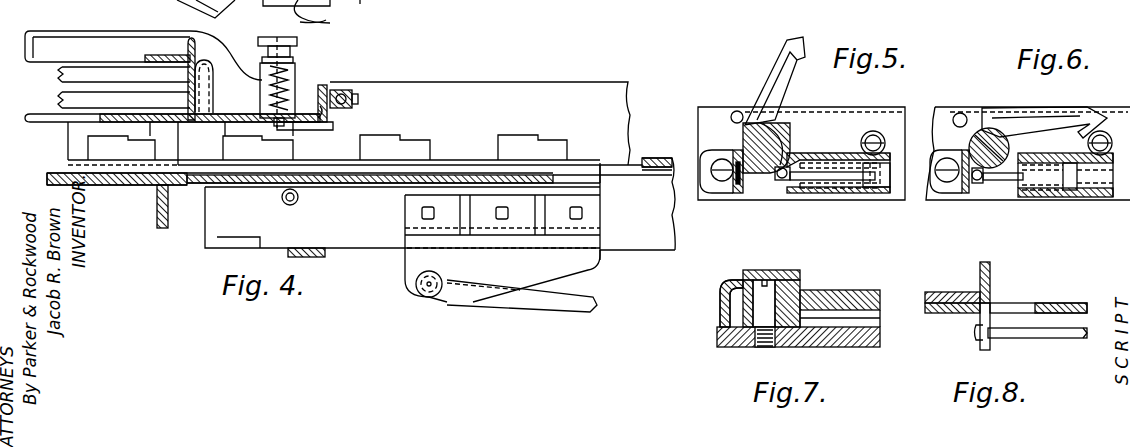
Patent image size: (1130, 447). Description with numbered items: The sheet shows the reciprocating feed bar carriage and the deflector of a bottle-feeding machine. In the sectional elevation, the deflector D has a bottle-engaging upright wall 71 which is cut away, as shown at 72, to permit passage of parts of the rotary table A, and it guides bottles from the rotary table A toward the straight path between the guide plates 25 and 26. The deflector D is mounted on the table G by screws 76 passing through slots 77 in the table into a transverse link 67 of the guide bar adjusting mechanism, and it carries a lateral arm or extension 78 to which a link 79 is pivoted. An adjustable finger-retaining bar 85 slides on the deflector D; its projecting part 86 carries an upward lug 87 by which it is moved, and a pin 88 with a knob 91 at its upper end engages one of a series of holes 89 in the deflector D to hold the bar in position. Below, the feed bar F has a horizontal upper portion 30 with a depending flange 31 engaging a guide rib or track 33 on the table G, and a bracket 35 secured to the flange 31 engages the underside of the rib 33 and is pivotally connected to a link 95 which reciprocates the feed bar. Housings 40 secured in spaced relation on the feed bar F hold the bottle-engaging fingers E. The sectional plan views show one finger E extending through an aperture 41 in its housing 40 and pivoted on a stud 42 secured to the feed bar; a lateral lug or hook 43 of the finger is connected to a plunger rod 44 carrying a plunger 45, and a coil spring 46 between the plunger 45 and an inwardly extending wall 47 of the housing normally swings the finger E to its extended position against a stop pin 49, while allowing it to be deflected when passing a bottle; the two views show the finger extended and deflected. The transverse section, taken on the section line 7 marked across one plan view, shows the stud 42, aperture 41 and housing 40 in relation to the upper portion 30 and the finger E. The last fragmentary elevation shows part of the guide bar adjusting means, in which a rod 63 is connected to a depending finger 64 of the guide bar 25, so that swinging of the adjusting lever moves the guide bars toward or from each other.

In FIG. 5, the section line 7 is at (790, 100).
In FIG. 8, the guide plate 25 is at (992, 273).
In FIG. 4, the guide plate 26 is at (480, 123).
In FIG. 4, the horizontal upper portion 30 is at (615, 164).
In FIG. 5, the horizontal upper portion 30 is at (801, 153).
In FIG. 6, the horizontal upper portion 30 is at (936, 150).
In FIG. 7, the horizontal upper portion 30 is at (715, 337).
In FIG. 4, the depending web or flange 31 is at (371, 199).
In FIG. 4, the guide rib or track 33 is at (637, 209).
In FIG. 4, the bracket 35 is at (502, 233).
In FIG. 4, the housing 40 is at (550, 130).
In FIG. 5, the housing 40 is at (830, 160).
In FIG. 6, the housing 40 is at (1093, 200).
In FIG. 7, the housing 40 is at (733, 278).
In FIG. 5, the aperture 41 is at (787, 171).
In FIG. 6, the aperture 41 is at (967, 167).
In FIG. 7, the aperture 41 is at (800, 283).
In FIG. 5, the stud 42 is at (773, 143).
In FIG. 6, the stud 42 is at (1007, 137).
In FIG. 7, the stud 42 is at (760, 293).
In FIG. 5, the lateral lug or hook 43 is at (757, 193).
In FIG. 6, the lateral lug or hook 43 is at (967, 193).
In FIG. 5, the plunger rod 44 is at (840, 183).
In FIG. 6, the plunger rod 44 is at (1052, 177).
In FIG. 5, the plunger 45 is at (880, 187).
In FIG. 6, the plunger 45 is at (1075, 177).
In FIG. 5, the coil spring 46 is at (832, 190).
In FIG. 6, the coil spring 46 is at (1027, 193).
In FIG. 5, the inwardly extending wall 47 is at (788, 187).
In FIG. 6, the inwardly extending wall 47 is at (997, 197).
In FIG. 5, the stop pin 49 is at (735, 110).
In FIG. 6, the stop pin 49 is at (955, 114).
In FIG. 8, the rod 63 is at (1063, 337).
In FIG. 8, the depending finger 64 is at (982, 318).
In FIG. 4, the transverse link 67 is at (318, 258).
In FIG. 4, the bottle-engaging upright wall 71 is at (95, 30).
In FIG. 4, the cut-away part 72 is at (56, 76).
In FIG. 4, the screw 76 is at (361, 15).
In FIG. 4, the slot 77 is at (404, 22).
In FIG. 4, the lateral arm or extension 78 is at (370, 97).
In FIG. 4, the link 79 is at (350, 90).
In FIG. 4, the adjustable finger-retaining bar 85 is at (192, 140).
In FIG. 4, the projecting part 86 is at (326, 126).
In FIG. 4, the lug or projection 87 is at (298, 68).
In FIG. 4, the pin 88 is at (306, 127).
In FIG. 4, the holes 89 is at (262, 118).
In FIG. 4, the knob or handle 91 is at (300, 42).
In FIG. 4, the link 95 is at (568, 305).
In FIG. 4, the rotary table A is at (140, 213).
In FIG. 4, the deflector D is at (142, 26).
In FIG. 6, the bottle-engaging finger E is at (1076, 108).
In FIG. 7, the bottle-engaging finger E is at (857, 290).
In FIG. 4, the feed bar F is at (450, 165).
In FIG. 5, the feed bar F is at (882, 107).
In FIG. 6, the feed bar F is at (979, 106).
In FIG. 7, the feed bar F is at (860, 347).
In FIG. 8, the feed bar F is at (953, 290).
In FIG. 4, the table G is at (343, 190).